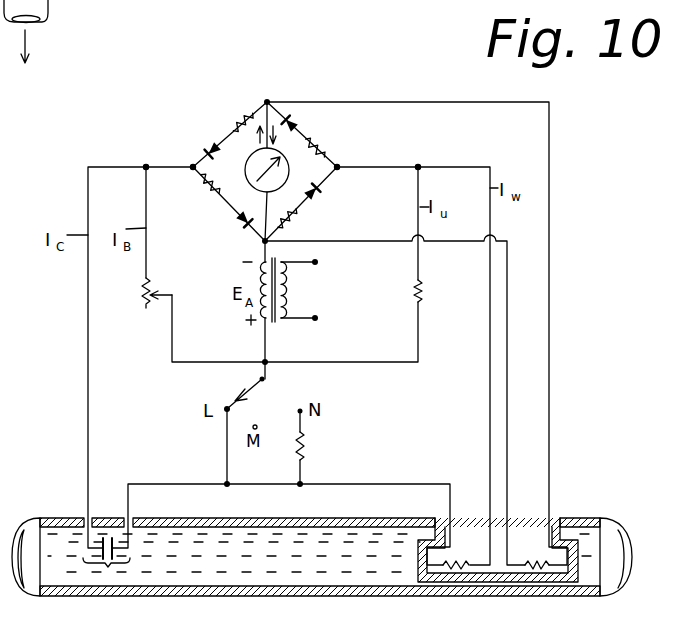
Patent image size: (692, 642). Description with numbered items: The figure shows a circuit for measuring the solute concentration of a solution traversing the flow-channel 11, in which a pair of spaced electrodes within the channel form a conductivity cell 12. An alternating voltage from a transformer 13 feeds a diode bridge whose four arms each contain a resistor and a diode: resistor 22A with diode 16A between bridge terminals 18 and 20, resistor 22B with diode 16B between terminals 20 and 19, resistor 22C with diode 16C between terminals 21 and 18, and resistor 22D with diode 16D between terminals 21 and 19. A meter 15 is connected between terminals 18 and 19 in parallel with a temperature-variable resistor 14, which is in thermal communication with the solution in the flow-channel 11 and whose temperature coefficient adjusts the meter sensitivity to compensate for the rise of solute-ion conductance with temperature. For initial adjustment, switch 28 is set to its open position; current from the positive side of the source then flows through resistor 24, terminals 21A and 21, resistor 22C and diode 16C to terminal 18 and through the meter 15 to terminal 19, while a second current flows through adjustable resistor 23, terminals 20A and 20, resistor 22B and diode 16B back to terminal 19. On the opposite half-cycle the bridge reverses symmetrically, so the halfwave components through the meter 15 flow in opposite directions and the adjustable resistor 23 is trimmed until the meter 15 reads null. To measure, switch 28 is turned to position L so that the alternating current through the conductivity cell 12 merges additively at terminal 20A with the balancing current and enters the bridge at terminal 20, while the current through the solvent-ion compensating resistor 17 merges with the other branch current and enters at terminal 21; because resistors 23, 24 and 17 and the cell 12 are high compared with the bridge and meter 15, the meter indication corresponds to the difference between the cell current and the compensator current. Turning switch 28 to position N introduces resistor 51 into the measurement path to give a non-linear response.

The flow-channel 11 is at (183, 518).
The conductivity cell 12 is at (109, 567).
The transformer 13 is at (292, 354).
The temperature-variable resistance means 14 is at (534, 569).
The meter 15 is at (252, 165).
The diode 16A is at (215, 142).
The diode 16B is at (240, 225).
The diode 16C is at (304, 124).
The diode 16D is at (324, 193).
The solvent-ion compensating resistor 17 is at (448, 569).
The bridge terminal 18 is at (269, 99).
The bridge terminal 19 is at (261, 243).
The bridge terminal 20 is at (191, 165).
The terminal 20A is at (145, 166).
The bridge terminal 21 is at (340, 166).
The terminal 21A is at (420, 166).
The resistor 22A is at (238, 114).
The resistor 22B is at (216, 189).
The resistor 22C is at (328, 147).
The resistor 22D is at (296, 218).
The adjustable resistor 23 is at (143, 292).
The resistor 24 is at (421, 293).
The switch 28 is at (250, 388).
The resistor 51 is at (306, 449).